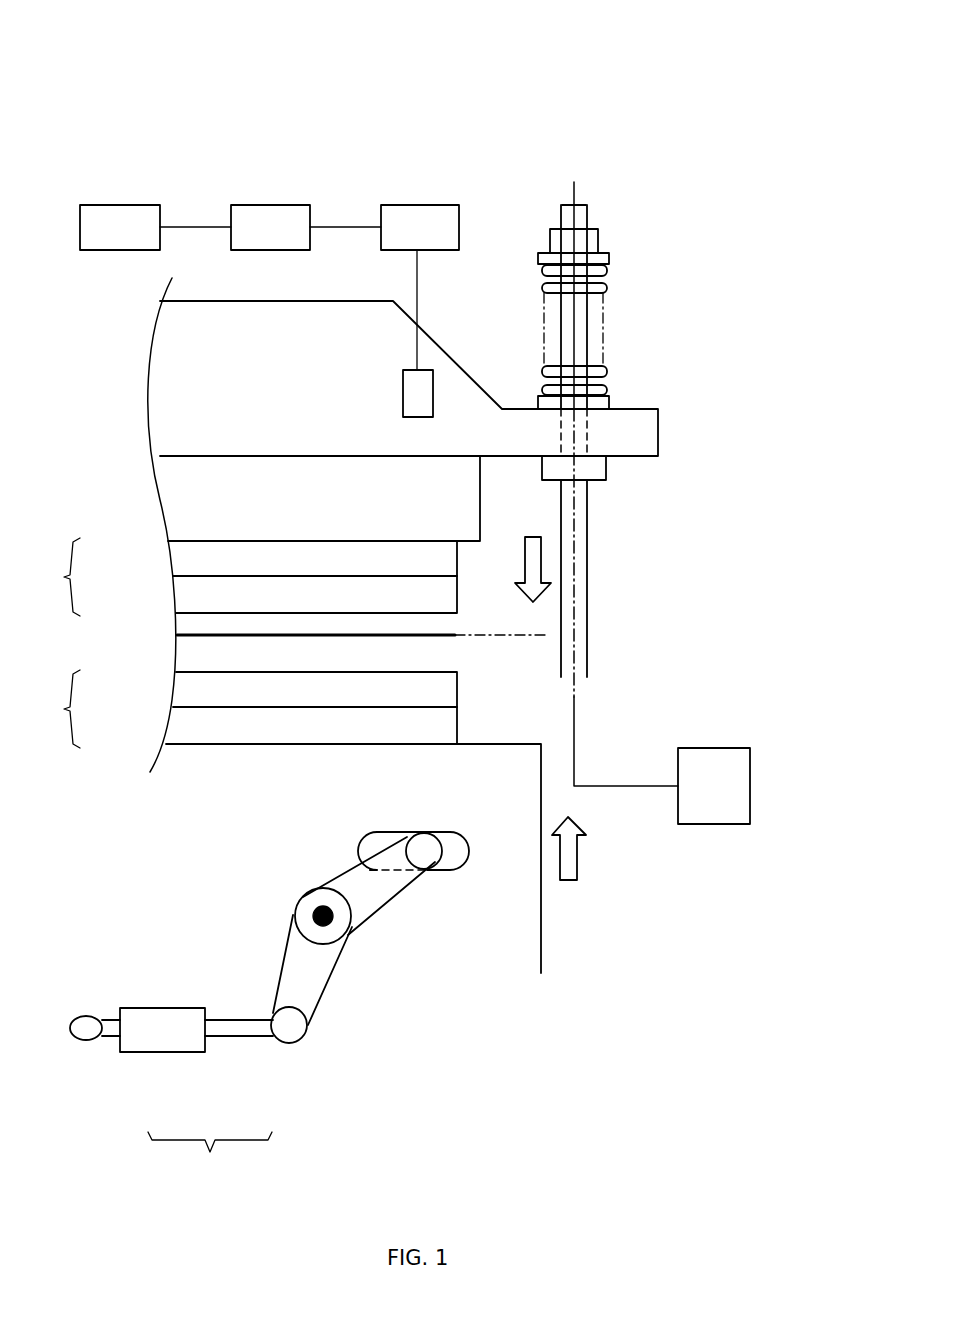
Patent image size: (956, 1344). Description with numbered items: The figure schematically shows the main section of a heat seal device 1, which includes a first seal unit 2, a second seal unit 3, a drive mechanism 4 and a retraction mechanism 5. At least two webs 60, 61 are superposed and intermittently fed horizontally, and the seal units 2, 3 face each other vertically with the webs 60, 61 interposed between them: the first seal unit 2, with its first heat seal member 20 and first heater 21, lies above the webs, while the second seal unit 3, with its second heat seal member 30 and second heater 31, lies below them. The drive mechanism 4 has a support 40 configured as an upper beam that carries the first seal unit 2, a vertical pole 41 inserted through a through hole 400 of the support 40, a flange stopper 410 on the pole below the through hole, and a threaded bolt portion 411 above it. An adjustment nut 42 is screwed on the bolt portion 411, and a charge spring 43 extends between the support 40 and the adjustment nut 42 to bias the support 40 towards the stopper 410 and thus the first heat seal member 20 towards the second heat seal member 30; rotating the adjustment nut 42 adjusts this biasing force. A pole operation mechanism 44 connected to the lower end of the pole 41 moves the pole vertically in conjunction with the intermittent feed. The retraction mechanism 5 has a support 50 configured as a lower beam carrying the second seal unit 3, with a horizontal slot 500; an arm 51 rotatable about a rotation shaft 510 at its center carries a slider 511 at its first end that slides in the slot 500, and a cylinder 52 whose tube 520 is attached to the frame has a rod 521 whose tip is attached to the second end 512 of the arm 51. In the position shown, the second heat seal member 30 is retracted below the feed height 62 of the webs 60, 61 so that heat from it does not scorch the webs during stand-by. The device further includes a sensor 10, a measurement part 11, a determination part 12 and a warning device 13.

The heat seal device 1 is at (497, 85).
The first seal unit 2 is at (60, 577).
The second seal unit 3 is at (60, 709).
The drive mechanism 4 is at (677, 233).
The retraction mechanism 5 is at (427, 987).
The sensor 10 is at (430, 387).
The measurement part 11 is at (420, 212).
The determination part 12 is at (268, 212).
The warning device 13 is at (118, 212).
The first heat seal member 20 is at (185, 593).
The first heater 21 is at (185, 553).
The second heat seal member 30 is at (185, 687).
The second heater 31 is at (185, 727).
The support 40 is at (477, 397).
The pole 41 is at (582, 537).
The adjustment nut 42 is at (552, 240).
The charge spring 43 is at (600, 370).
The pole operation mechanism 44 is at (713, 757).
The support 50 is at (531, 935).
The arm 51 is at (316, 973).
The cylinder 52 is at (210, 1157).
The web 60 is at (443, 635).
The web 61 is at (443, 635).
The feed height 62 is at (517, 637).
The through hole 400 is at (587, 429).
The stopper 410 is at (598, 465).
The bolt portion 411 is at (580, 217).
The slot 500 is at (370, 840).
The rotation shaft 510 is at (312, 915).
The slider 511 is at (437, 852).
The second end 512 is at (292, 1037).
The tube 520 is at (176, 1045).
The rod 521 is at (236, 1032).